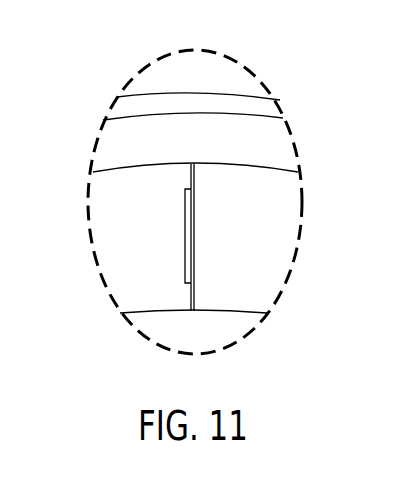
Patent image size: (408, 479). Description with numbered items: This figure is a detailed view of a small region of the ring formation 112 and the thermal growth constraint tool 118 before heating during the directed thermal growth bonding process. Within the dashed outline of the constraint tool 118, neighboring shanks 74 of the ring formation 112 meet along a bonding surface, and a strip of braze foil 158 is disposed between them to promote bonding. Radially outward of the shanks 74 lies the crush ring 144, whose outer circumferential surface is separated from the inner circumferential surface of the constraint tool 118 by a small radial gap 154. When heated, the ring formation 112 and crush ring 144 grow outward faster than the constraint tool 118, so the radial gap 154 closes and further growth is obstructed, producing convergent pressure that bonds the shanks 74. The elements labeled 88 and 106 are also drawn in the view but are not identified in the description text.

The ring formation 112 is at (182, 184).
The thermal growth constraint tool 118 is at (218, 58).
The radial gap 154 is at (280, 104).
The crush ring 144 is at (283, 143).
The side wall 88 is at (90, 203).
The shanks 74 is at (157, 245).
The connecting member 106 is at (223, 279).
The braze foil strip 158 is at (186, 210).